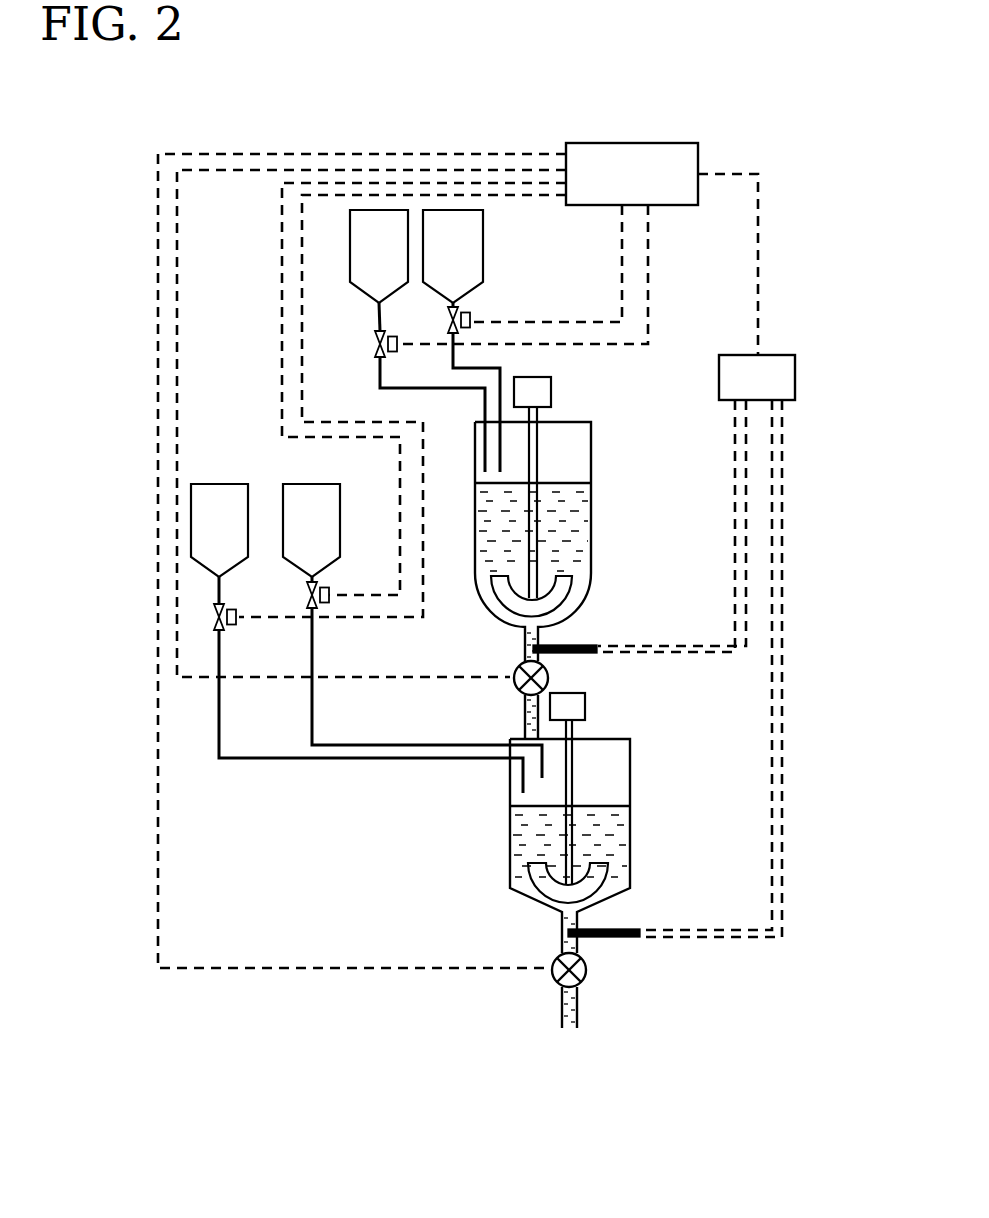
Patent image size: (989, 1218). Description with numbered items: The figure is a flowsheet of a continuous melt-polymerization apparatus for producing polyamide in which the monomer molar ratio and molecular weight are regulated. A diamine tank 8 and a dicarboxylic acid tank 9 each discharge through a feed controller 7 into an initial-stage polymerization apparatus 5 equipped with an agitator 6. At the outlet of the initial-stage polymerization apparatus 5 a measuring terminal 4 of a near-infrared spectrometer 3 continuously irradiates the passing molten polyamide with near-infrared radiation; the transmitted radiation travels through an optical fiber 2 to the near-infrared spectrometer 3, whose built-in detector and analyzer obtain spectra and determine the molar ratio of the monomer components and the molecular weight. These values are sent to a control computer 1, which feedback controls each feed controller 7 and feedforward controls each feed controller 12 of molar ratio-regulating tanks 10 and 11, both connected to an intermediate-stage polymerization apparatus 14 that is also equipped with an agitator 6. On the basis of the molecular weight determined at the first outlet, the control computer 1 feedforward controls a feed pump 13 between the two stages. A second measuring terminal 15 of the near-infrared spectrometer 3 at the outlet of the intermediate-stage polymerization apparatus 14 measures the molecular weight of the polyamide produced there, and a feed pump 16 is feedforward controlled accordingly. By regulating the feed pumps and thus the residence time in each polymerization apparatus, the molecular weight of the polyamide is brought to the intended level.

The control computer 1 is at (632, 174).
The optical fiber 2 is at (735, 466).
The near-infrared spectrometer 3 is at (757, 377).
The measuring terminal 4 is at (565, 645).
The initial-stage polymerization apparatus 5 is at (591, 472).
The agitator 6 is at (549, 640).
The feed controller 7 is at (373, 342).
The diamine tank 8 is at (379, 256).
The dicarboxylic acid tank 9 is at (453, 256).
The molar ratio-regulating tank 10 is at (311, 530).
The molar ratio-regulating tank 11 is at (219, 530).
The feed controller 12 is at (228, 630).
The feed pump 13 is at (512, 680).
The intermediate-stage polymerization apparatus 14 is at (630, 782).
The measuring terminal 15 is at (612, 940).
The feed pump 16 is at (550, 976).